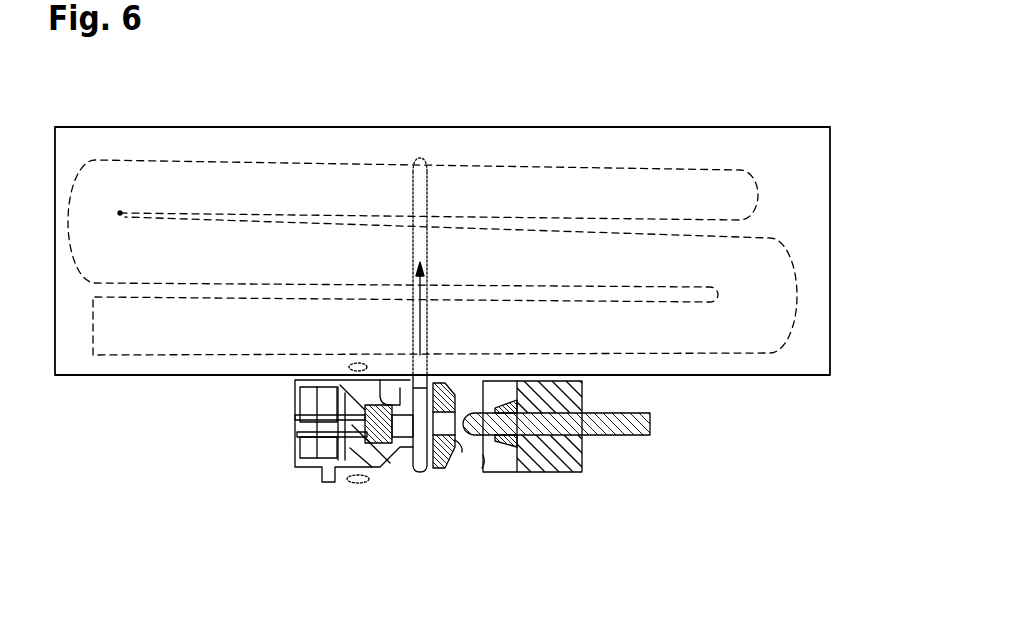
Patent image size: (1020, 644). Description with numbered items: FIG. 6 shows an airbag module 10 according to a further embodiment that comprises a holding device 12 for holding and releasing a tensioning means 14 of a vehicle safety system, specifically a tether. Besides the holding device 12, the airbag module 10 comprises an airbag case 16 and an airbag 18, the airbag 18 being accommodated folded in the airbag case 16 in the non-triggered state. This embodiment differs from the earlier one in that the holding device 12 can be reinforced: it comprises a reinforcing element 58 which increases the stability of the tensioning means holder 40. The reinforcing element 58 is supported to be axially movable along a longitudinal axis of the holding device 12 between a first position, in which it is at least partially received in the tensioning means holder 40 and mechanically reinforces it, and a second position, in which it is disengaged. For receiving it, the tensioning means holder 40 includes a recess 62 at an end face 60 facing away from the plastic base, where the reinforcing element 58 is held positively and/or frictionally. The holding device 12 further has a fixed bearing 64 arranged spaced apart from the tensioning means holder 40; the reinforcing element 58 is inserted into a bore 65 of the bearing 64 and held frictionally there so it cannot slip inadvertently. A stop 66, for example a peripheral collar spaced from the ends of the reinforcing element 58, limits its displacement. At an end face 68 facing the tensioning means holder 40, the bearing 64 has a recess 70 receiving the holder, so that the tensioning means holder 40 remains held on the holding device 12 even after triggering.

The airbag module 10 is at (705, 110).
The holding device 12 is at (318, 503).
The tensioning means 14 is at (420, 473).
The airbag case 16 is at (97, 140).
The airbag 18 is at (335, 160).
The tensioning means holder 40 is at (392, 472).
The reinforcing element 58 is at (637, 419).
The end face 60 is at (462, 452).
The recess 62 is at (441, 445).
The fixed bearing 64 is at (562, 460).
The bore 65 is at (578, 438).
The stop 66 is at (518, 462).
The end face 68 is at (482, 468).
The recess 70 is at (503, 458).